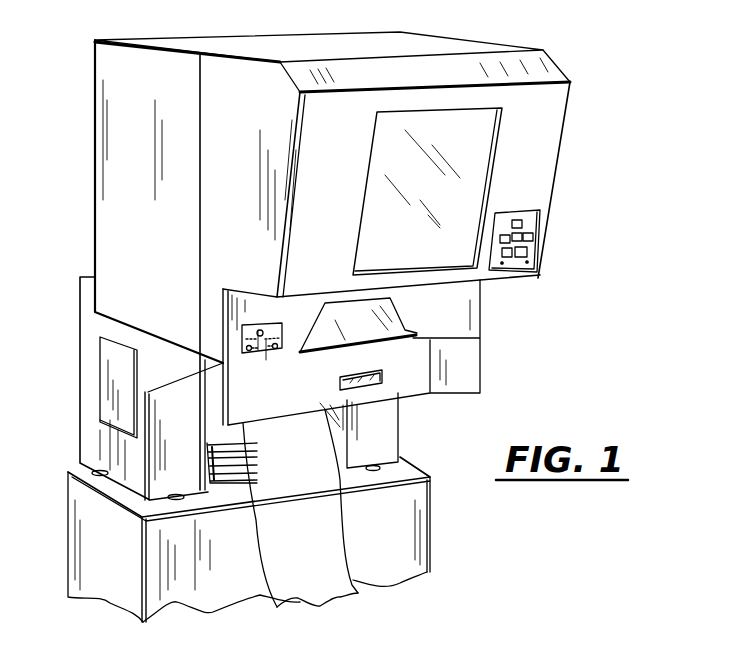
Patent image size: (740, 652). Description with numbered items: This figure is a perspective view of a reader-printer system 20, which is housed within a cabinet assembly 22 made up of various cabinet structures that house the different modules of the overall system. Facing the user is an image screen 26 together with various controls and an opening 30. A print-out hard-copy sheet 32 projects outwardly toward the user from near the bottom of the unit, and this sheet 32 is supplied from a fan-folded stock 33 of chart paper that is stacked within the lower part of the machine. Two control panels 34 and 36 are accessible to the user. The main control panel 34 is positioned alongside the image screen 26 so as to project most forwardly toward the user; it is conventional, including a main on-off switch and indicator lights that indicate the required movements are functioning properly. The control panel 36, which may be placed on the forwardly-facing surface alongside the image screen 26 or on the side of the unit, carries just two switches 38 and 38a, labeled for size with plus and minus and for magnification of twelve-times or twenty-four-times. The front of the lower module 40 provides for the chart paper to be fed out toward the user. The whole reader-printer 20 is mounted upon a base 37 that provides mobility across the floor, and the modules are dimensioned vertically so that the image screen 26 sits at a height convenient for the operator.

The reader-printer system 20 is at (581, 199).
The cabinet assembly 22 is at (75, 389).
The image screen 26 is at (487, 152).
The opening 30 is at (345, 306).
The print-out hard-copy sheet 32 is at (333, 585).
The fan-folded stock 33 is at (207, 445).
The main control panel 34 is at (530, 247).
The control panel 36 is at (236, 341).
The base 37 is at (420, 528).
The switch 38 is at (248, 350).
The switch 38a is at (277, 350).
The lower module 40 is at (93, 440).